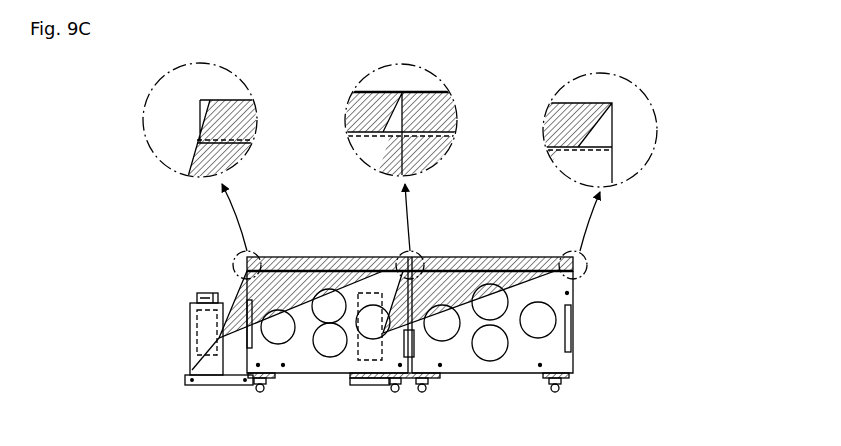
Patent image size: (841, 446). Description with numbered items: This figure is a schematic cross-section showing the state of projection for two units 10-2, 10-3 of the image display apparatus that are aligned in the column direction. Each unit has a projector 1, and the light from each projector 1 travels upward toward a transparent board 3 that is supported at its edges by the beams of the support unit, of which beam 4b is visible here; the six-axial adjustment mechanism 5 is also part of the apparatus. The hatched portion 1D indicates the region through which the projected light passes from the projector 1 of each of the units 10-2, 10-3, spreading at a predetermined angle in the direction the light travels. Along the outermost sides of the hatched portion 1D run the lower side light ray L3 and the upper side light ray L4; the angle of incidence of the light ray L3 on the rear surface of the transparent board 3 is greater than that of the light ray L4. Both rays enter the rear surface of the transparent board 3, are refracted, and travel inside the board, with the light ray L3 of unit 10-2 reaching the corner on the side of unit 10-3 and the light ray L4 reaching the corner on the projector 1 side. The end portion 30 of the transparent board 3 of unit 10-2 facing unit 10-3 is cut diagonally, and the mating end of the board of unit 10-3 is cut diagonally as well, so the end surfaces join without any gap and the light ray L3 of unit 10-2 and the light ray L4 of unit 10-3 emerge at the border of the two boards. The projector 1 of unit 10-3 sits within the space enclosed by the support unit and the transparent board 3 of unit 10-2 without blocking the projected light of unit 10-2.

The transparent board 3 is at (205, 106).
The end portion 30 is at (402, 92).
The hatched portion 1D is at (234, 297).
The upper side light ray L4 is at (230, 314).
The lower side light ray L3 is at (303, 310).
The projector 1 is at (205, 327).
The six-axial adjustment mechanism 5 is at (220, 386).
The unit 10-2 is at (298, 379).
The unit 10-3 is at (492, 379).
The beam 4b is at (342, 374).